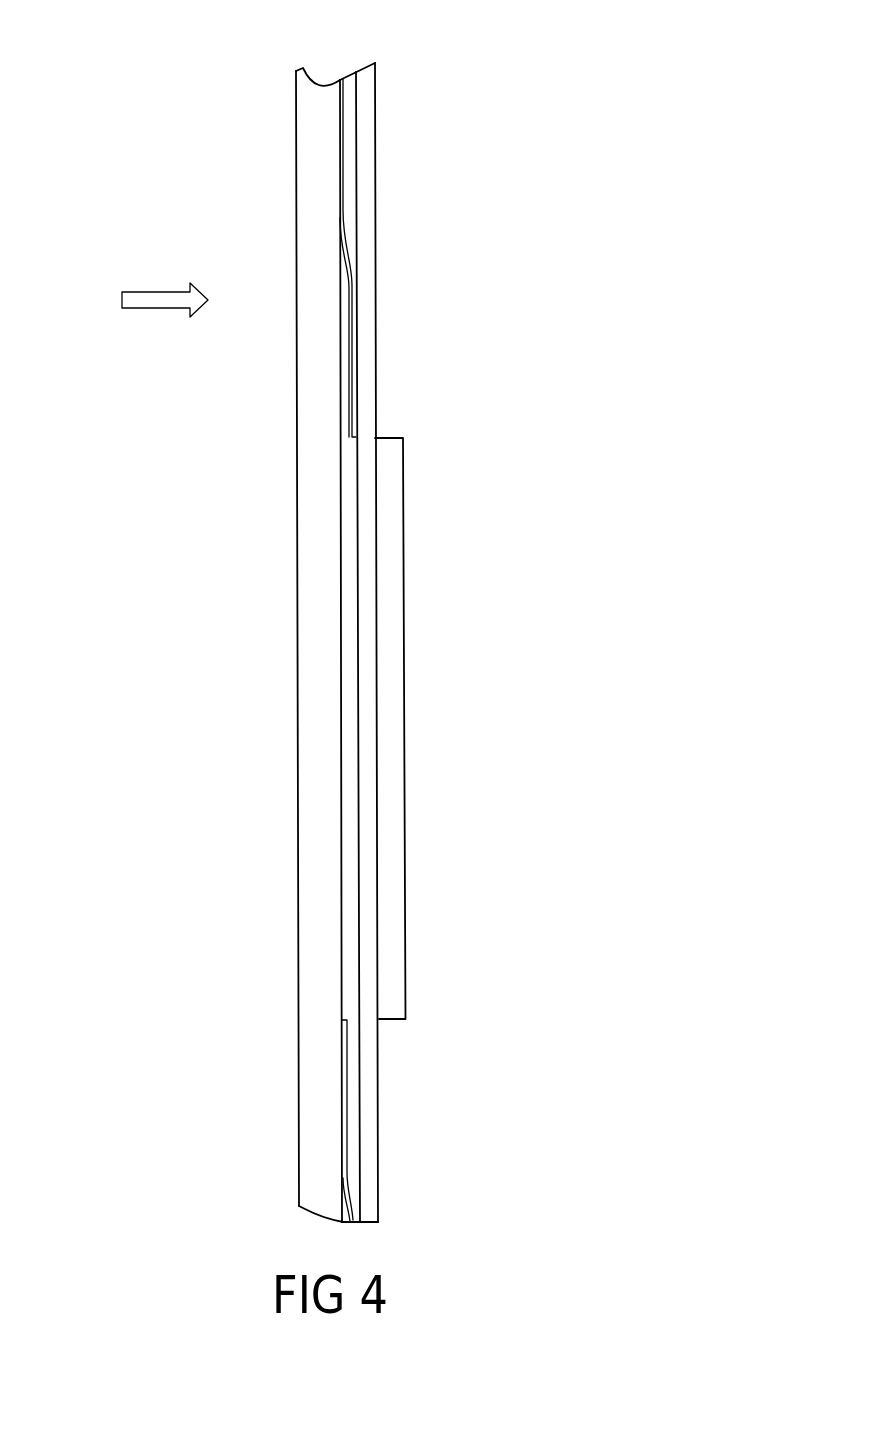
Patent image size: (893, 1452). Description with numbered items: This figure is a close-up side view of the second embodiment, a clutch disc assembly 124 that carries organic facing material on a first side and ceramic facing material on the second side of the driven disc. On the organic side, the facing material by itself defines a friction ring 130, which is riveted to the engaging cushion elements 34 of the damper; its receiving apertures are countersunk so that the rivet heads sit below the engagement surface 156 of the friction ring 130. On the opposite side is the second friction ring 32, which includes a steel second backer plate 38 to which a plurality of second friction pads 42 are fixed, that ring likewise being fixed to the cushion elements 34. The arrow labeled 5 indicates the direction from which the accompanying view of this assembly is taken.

The viewing direction arrow for FIG. 5 is at (150, 301).
The door panel 32 is at (382, 1154).
The flange / retaining clip 34 is at (340, 80).
The inner panel layer 38 is at (369, 1196).
The mounting tab 42 is at (393, 1007).
The door assembly 124 is at (390, 50).
The outer panel 130 is at (322, 1190).
The door skin 156 is at (273, 1122).